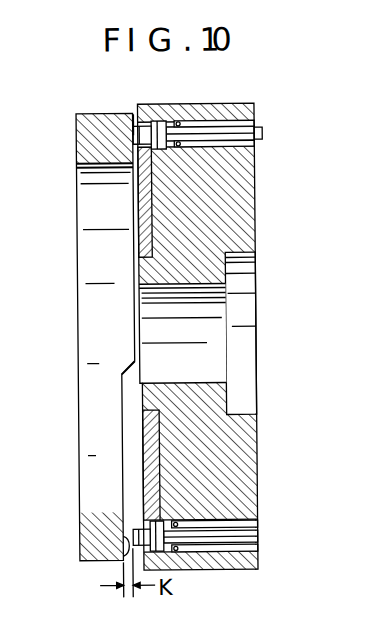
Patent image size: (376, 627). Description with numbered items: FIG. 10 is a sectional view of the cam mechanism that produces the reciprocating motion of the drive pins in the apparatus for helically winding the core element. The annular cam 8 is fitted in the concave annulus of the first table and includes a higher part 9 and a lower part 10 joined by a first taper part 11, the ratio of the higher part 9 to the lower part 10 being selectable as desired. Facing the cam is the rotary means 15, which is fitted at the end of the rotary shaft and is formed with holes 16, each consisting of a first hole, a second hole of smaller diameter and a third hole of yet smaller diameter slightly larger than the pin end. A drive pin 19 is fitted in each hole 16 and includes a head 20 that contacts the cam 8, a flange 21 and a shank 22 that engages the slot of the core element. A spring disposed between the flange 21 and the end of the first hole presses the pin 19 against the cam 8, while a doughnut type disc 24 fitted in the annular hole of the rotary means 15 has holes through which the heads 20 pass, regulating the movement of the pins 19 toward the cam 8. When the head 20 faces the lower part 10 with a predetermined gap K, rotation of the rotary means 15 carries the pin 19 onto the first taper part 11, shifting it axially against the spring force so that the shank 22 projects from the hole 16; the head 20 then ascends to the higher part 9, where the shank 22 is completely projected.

The annular cam 8 is at (77, 237).
The higher part 9 is at (135, 134).
The lower part 10 is at (114, 556).
The first taper part 11 is at (120, 369).
The rotary means 15 is at (224, 311).
The holes 16 is at (203, 127).
The drive pin 19 is at (224, 101).
The head 20 is at (150, 126).
The flange 21 is at (172, 128).
The shank 22 is at (262, 132).
The doughnut type disc 24 is at (147, 213).